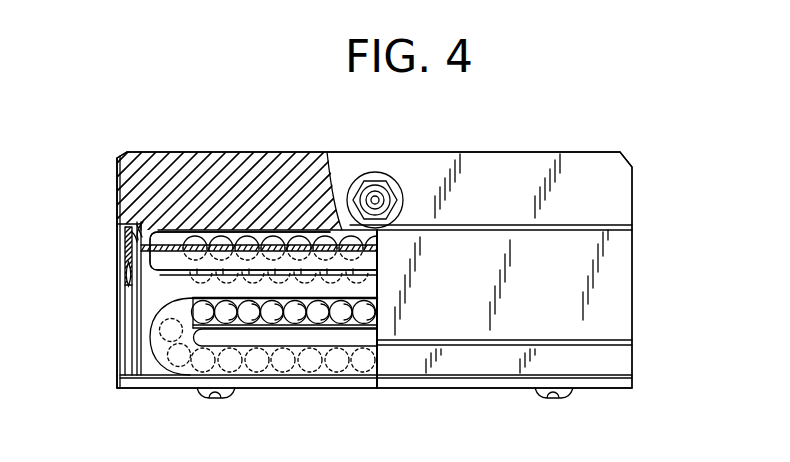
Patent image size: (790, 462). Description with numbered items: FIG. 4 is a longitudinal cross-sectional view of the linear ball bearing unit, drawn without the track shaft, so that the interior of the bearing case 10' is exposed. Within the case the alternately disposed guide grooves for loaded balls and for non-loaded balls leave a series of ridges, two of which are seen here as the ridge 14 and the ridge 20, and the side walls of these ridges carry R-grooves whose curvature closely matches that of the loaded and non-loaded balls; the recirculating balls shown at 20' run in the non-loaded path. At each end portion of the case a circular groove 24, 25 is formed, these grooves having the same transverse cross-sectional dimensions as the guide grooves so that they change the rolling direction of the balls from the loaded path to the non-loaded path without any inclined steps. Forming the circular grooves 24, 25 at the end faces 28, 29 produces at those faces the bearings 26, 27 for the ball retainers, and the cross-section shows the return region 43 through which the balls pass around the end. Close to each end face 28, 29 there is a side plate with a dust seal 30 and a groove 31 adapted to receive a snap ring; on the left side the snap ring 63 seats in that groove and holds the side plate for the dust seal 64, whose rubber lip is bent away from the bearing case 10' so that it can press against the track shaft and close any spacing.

The bearing case 10' is at (374, 239).
The ridge 14 is at (282, 338).
The ridge 20 is at (300, 291).
The recirculating balls 20' is at (268, 378).
The circular groove 24 is at (188, 231).
The circular groove 25 is at (212, 195).
The bearing for ball retainer 26 is at (255, 222).
The bearing for ball retainer 27 is at (263, 251).
The end face 28 is at (117, 166).
The end face 29 is at (633, 187).
The side plate with dust seal 30 is at (150, 197).
The groove for receiving snap ring 31 is at (123, 222).
The ball return passage 43 is at (262, 325).
The snap ring 63 is at (122, 243).
The side plate for dust seal 64 is at (129, 277).